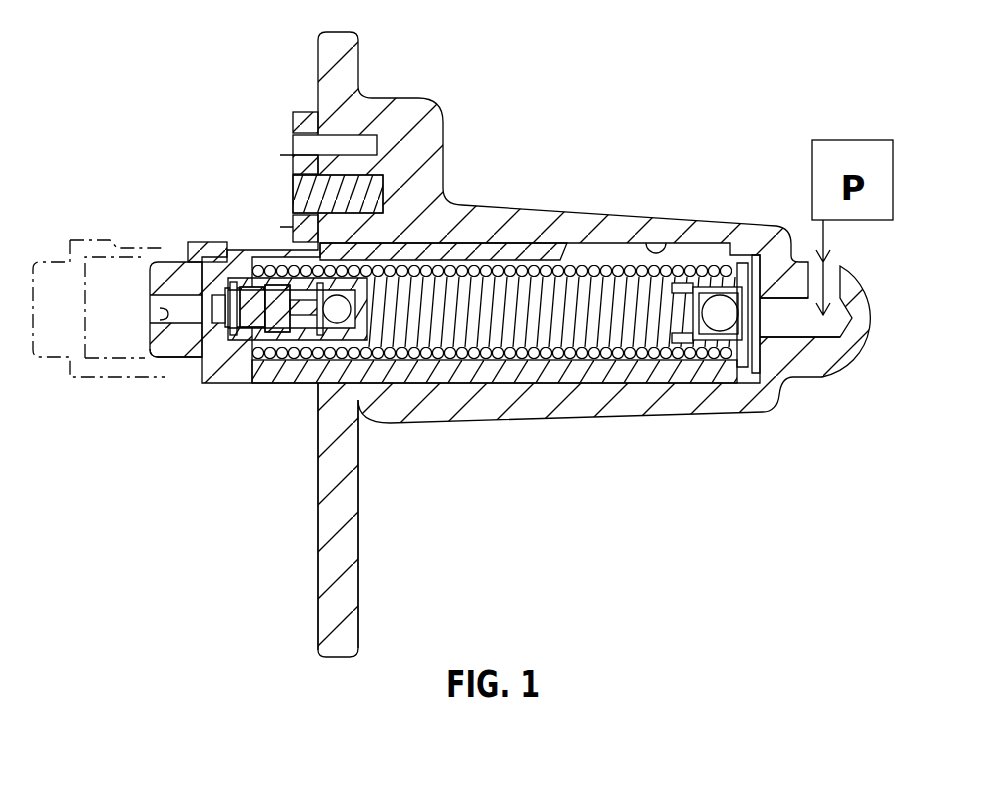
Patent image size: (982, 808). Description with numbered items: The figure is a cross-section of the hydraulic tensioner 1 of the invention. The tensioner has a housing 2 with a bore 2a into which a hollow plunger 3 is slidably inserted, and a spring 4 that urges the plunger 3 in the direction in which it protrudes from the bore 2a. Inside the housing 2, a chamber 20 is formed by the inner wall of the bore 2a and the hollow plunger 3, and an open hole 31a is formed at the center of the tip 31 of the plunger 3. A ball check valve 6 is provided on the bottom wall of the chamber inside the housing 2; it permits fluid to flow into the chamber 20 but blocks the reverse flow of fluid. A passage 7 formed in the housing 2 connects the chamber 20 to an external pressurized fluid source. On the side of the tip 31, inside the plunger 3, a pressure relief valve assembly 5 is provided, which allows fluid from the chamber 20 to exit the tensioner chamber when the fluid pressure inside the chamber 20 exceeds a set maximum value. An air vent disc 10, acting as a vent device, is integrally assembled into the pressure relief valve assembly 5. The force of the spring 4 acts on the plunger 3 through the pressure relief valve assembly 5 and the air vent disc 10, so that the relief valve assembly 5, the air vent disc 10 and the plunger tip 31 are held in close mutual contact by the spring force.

The hydraulic tensioner 1 is at (608, 92).
The housing 2 is at (525, 215).
The bore 2a is at (660, 252).
The hollow plunger 3 is at (432, 378).
The spring 4 is at (605, 358).
The pressure relief valve assembly 5 is at (237, 383).
The ball check valve 6 is at (742, 257).
The passage 7 is at (805, 320).
The air vent disc 10 is at (210, 383).
The chamber 20 is at (690, 372).
The tip 31 is at (164, 268).
The open hole 31a is at (162, 360).